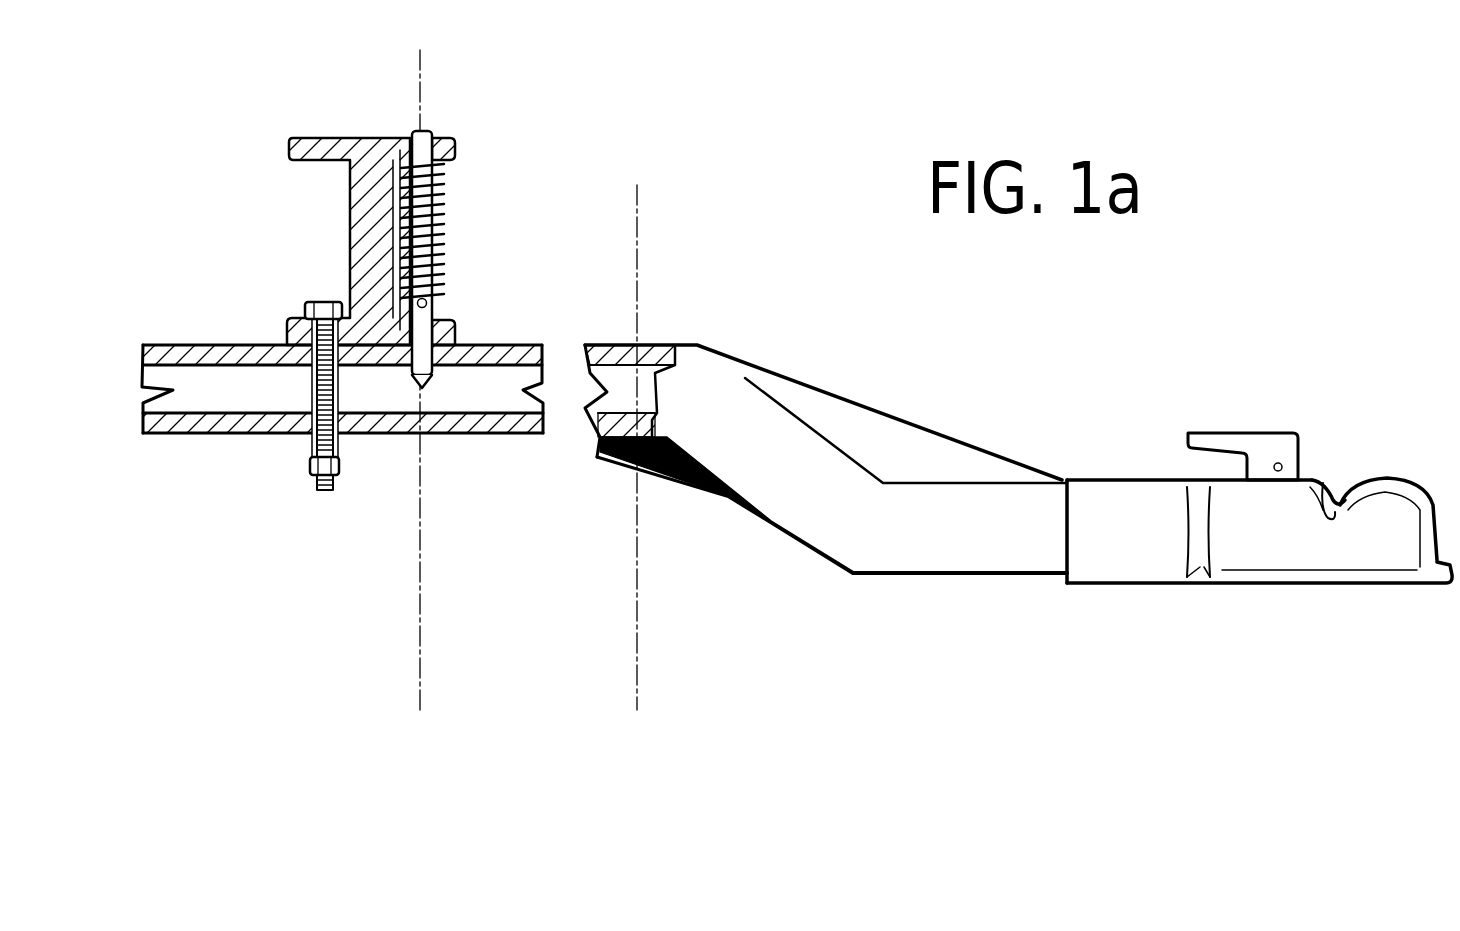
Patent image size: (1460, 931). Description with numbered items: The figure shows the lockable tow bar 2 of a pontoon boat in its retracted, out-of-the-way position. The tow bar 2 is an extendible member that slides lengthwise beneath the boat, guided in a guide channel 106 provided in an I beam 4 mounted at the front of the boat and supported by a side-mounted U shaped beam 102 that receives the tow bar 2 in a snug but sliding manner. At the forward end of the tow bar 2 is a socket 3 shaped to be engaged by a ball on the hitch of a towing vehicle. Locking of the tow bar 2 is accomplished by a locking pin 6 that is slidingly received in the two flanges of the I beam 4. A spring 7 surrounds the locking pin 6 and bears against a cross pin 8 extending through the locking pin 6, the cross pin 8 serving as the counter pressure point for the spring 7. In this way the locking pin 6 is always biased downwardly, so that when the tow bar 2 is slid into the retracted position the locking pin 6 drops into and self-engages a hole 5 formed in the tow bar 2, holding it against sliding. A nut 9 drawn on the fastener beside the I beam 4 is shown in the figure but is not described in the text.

The tow bar 2 is at (767, 423).
The socket 3 is at (1383, 497).
The I beam 4 is at (338, 138).
The hole 5 is at (440, 373).
The locking pin 6 is at (432, 137).
The spring 7 is at (440, 217).
The cross pin 8 is at (437, 307).
The nut 9 is at (323, 310).
The U shaped beam 102 is at (207, 430).
The guide channel 106 is at (313, 443).